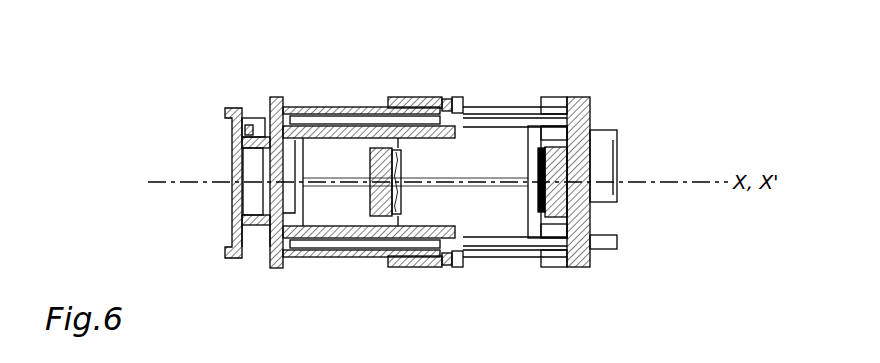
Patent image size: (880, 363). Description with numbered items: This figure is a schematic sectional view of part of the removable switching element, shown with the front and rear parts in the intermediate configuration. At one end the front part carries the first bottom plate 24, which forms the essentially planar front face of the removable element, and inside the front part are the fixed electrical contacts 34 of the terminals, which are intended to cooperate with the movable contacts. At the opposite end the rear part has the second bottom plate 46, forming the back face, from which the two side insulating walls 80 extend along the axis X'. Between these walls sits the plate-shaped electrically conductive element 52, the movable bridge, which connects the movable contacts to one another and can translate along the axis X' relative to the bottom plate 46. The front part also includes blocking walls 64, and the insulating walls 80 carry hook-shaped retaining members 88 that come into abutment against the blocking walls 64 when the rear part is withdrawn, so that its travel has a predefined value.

The first bottom plate 24 is at (590, 162).
The fixed electrical contacts 34 is at (534, 176).
The second bottom plate 46 is at (222, 140).
The electrically conductive element 52 is at (370, 202).
The blocking walls 64 is at (412, 97).
The side insulating walls 80 is at (335, 107).
The retaining members 88 is at (458, 96).